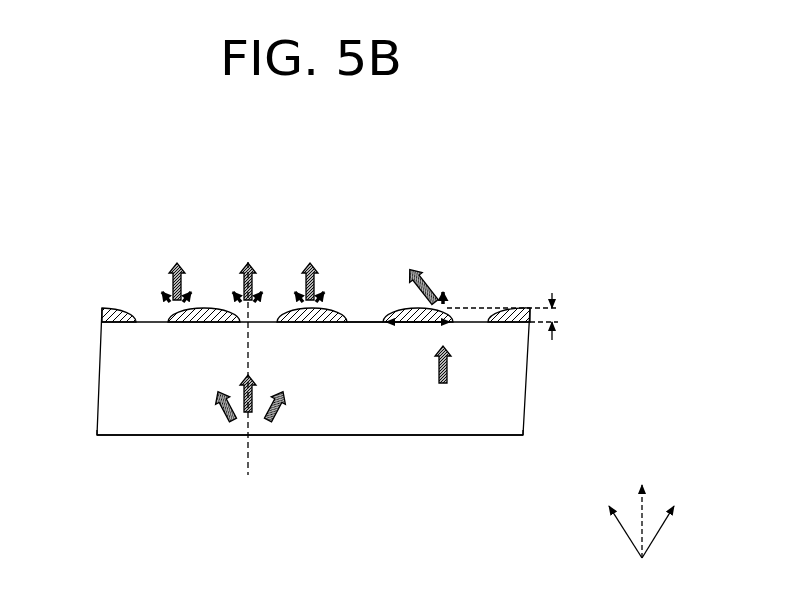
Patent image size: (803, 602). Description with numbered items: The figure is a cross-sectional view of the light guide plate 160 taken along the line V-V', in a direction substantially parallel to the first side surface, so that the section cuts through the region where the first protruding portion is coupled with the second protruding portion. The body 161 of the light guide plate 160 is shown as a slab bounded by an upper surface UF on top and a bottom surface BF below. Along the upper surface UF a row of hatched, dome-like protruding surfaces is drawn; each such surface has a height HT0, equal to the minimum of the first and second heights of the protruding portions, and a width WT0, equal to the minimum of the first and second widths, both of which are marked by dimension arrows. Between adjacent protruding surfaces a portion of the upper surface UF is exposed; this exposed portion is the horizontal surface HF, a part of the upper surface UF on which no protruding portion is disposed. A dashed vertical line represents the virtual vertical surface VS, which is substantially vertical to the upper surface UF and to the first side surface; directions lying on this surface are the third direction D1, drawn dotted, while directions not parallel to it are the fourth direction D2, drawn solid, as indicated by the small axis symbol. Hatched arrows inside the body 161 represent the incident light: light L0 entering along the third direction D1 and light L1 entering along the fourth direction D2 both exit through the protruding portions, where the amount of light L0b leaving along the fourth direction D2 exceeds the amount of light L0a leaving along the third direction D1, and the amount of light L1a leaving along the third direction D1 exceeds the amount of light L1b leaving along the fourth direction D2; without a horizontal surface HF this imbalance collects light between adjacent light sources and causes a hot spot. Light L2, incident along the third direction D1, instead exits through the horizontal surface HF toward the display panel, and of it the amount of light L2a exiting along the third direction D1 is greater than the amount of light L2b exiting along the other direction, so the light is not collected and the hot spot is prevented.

The light guide plate 160 is at (535, 228).
The body 161 is at (510, 390).
The upper surface UF is at (100, 336).
The bottom surface BF is at (172, 435).
The horizontal surface HF is at (372, 312).
The vertical surface VS is at (248, 455).
The section line start V is at (103, 448).
The section line end V' is at (528, 448).
The light L0 is at (440, 368).
The light L1 is at (273, 385).
The light L2 is at (255, 383).
The light L0a is at (449, 298).
The light L0b is at (419, 269).
The light L1a is at (308, 262).
The light L1b is at (293, 288).
The light L2a is at (247, 262).
The light L2b is at (233, 288).
The width of protruding surface WT0 is at (418, 337).
The height of protruding surface HT0 is at (522, 316).
The third direction D1 is at (640, 506).
The fourth direction D2 is at (622, 531).